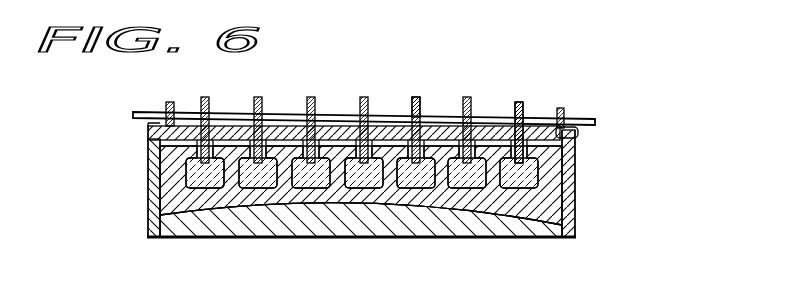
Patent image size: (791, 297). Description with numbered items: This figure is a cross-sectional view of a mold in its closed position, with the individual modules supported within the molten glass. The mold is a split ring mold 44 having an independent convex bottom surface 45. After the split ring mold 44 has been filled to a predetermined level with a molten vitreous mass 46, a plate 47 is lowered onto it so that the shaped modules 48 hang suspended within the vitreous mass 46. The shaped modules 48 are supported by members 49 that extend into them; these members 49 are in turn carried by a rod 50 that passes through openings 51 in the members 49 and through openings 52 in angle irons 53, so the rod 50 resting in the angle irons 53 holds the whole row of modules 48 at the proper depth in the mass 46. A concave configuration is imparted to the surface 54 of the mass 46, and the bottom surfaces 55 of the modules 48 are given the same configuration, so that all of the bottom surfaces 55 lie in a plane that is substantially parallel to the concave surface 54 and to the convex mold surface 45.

The split ring mold 44 is at (567, 183).
The convex bottom surface 45 is at (335, 203).
The molten vitreous mass 46 is at (565, 215).
The plate 47 is at (573, 136).
The shaped modules 48 is at (372, 160).
The members 49 is at (518, 102).
The rod 50 is at (333, 58).
The openings 51 is at (422, 108).
The openings 52 is at (561, 107).
The angle irons 53 is at (169, 102).
The concave surface 54 is at (190, 214).
The bottom surfaces 55 is at (215, 189).